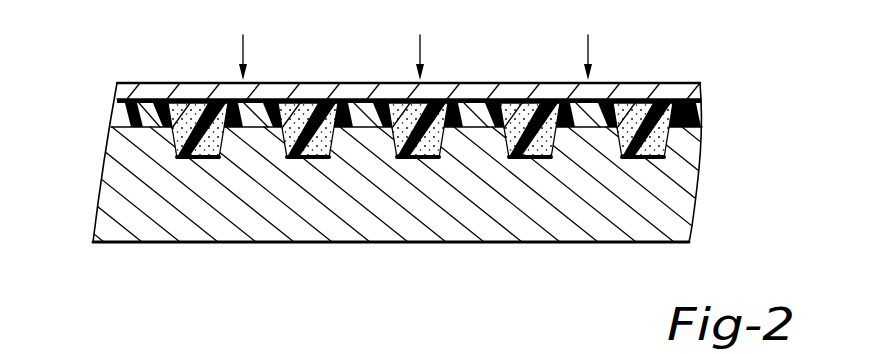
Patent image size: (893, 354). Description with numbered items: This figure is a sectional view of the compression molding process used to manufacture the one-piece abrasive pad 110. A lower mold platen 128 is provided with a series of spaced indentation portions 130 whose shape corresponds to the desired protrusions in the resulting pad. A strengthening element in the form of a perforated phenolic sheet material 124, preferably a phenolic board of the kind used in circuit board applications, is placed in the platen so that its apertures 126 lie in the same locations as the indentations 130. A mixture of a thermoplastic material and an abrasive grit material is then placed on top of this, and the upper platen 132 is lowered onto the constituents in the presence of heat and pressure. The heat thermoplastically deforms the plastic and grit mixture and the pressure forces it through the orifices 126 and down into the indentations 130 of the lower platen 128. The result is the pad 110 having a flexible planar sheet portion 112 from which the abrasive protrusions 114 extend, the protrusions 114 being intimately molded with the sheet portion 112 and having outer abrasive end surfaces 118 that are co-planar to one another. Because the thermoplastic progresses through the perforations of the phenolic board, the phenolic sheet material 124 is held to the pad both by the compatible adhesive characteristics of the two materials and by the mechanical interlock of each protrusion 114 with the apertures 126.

The abrasive pad 110 is at (109, 55).
The flexible planar sheet portion 112 is at (704, 98).
The abrasive protrusion 114 is at (358, 108).
The outer abrasive end surface 118 is at (210, 158).
The perforated phenolic sheet material 124 is at (700, 117).
The apertures 126 is at (208, 108).
The lower mold platen 128 is at (695, 212).
The indentation portions 130 is at (185, 158).
The upper platen 132 is at (700, 86).